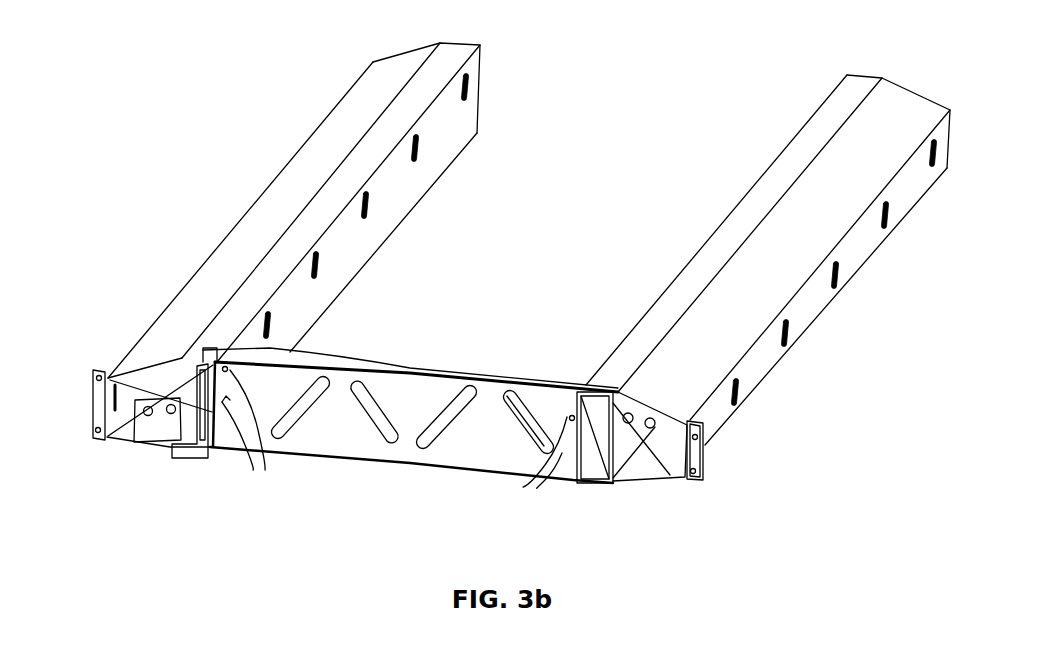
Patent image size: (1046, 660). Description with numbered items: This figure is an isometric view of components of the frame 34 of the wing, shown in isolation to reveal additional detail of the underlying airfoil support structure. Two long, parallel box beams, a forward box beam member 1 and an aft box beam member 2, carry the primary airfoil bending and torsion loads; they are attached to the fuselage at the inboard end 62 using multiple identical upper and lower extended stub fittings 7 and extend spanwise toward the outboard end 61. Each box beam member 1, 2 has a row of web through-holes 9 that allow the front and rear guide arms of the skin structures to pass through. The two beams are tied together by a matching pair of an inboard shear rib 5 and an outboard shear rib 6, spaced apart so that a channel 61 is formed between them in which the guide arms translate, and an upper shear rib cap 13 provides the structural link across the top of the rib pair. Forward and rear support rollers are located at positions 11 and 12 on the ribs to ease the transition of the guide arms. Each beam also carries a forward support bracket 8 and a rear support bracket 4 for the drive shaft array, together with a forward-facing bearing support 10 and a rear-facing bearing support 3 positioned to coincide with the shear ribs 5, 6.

The forward box beam member 1 is at (825, 220).
The aft box beam member 2 is at (282, 215).
The rear-facing bearing support 3 is at (98, 398).
The rear support bracket 4 is at (157, 423).
The inboard shear rib 5 is at (342, 423).
The outboard shear rib 6 is at (540, 382).
The extended stub fitting 7 is at (187, 447).
The forward support bracket 8 is at (670, 477).
The web through-hole 9 is at (447, 140).
The forward-facing bearing support 10 is at (703, 445).
The forward support roller position 11 is at (262, 470).
The rear support roller position 12 is at (523, 500).
The upper shear rib cap 13 is at (373, 350).
The frame 34 is at (163, 108).
The outboard end / channel 61 is at (585, 440).
The inboard end 62 is at (420, 492).